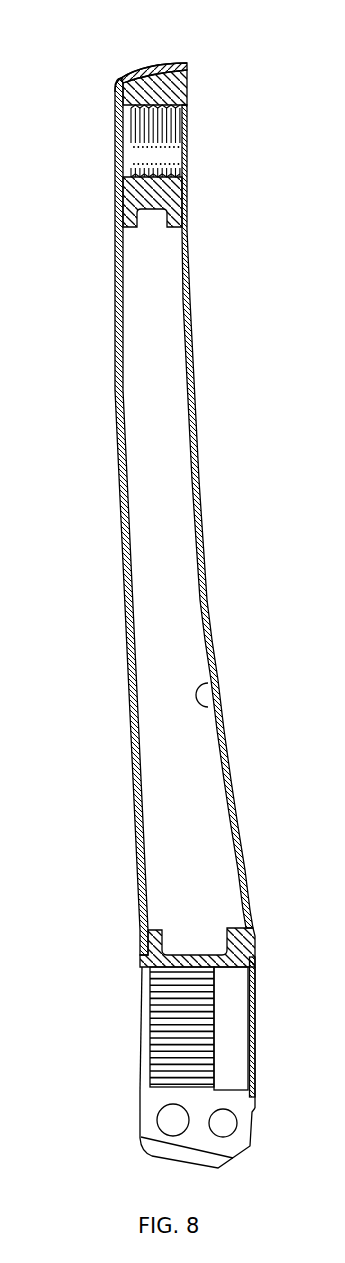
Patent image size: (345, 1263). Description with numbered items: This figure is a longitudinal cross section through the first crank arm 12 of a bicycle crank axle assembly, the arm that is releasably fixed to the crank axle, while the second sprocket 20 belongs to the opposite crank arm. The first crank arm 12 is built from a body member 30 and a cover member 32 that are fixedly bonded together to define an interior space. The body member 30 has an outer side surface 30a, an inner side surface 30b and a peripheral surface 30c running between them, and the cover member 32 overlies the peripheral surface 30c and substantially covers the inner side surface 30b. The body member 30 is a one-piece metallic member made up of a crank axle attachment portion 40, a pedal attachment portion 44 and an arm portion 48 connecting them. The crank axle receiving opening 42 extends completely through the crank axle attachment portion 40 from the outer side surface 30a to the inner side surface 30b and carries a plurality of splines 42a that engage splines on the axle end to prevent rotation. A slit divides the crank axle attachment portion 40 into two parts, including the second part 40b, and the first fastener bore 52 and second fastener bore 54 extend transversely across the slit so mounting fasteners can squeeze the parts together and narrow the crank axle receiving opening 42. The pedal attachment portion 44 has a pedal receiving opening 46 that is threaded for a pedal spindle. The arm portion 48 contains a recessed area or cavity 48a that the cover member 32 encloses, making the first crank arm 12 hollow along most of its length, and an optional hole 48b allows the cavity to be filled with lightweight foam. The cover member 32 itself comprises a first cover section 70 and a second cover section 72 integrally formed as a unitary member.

The first crank arm 12 is at (69, 137).
The second sprocket 20 is at (183, 1160).
The body member 30 is at (182, 482).
The outer side surface 30a is at (115, 84).
The inner side surface 30b is at (188, 90).
The peripheral surface 30c is at (152, 65).
The cover member 32 is at (113, 323).
The crank axle attachment portion 40 is at (236, 946).
The second part 40b is at (168, 1097).
The crank axle receiving opening 42 is at (231, 1046).
The splines 42a is at (175, 1022).
The pedal attachment portion 44 is at (163, 194).
The pedal receiving opening 46 is at (168, 126).
The arm portion 48 is at (205, 572).
The recessed area or cavity 48a is at (208, 712).
The hole 48b is at (231, 800).
The first fastener bore 52 is at (226, 1130).
The second fastener bore 54 is at (160, 1123).
The first cover section 70 is at (124, 596).
The second cover section 72 is at (140, 68).